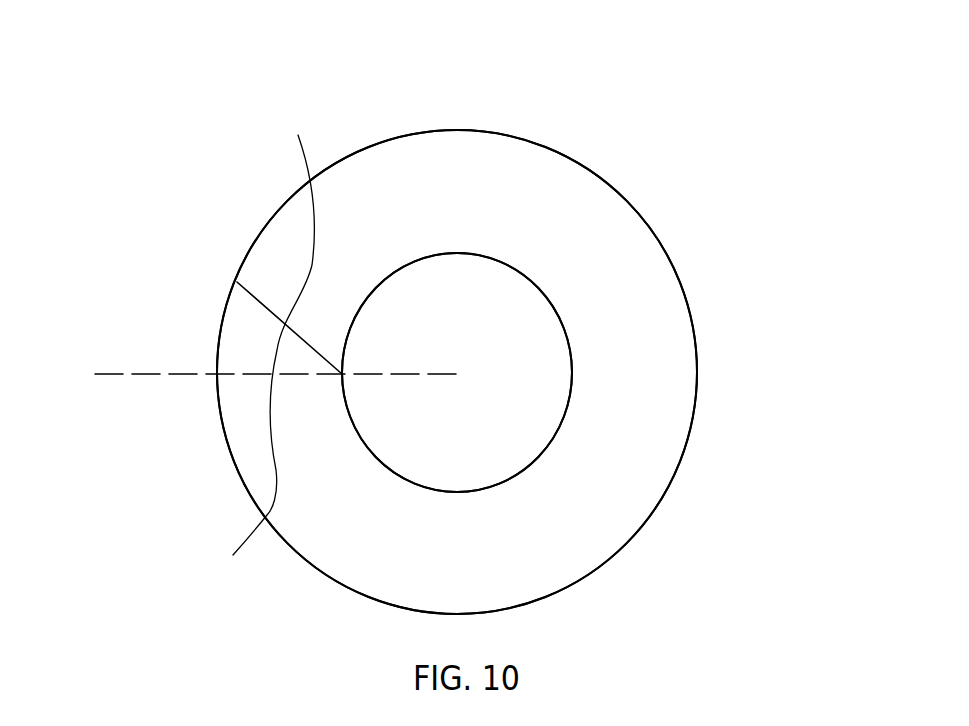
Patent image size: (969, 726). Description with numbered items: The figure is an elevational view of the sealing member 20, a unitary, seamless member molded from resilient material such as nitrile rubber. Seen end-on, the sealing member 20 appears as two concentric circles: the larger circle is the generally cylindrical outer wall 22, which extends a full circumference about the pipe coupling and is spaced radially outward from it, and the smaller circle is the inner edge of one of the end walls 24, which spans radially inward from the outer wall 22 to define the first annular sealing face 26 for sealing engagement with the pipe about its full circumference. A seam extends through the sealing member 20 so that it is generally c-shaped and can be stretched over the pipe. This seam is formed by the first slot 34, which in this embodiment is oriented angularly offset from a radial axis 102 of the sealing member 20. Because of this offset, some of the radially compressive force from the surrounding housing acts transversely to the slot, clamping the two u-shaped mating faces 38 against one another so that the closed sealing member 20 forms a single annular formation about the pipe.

The sealing member 20 is at (683, 203).
The outer wall 22 is at (693, 415).
The end walls 24 is at (575, 520).
The first annular sealing face 26 is at (572, 318).
The first slot 34 is at (273, 301).
The u-shaped mating faces 38 is at (247, 343).
The radial axis 102 is at (140, 377).